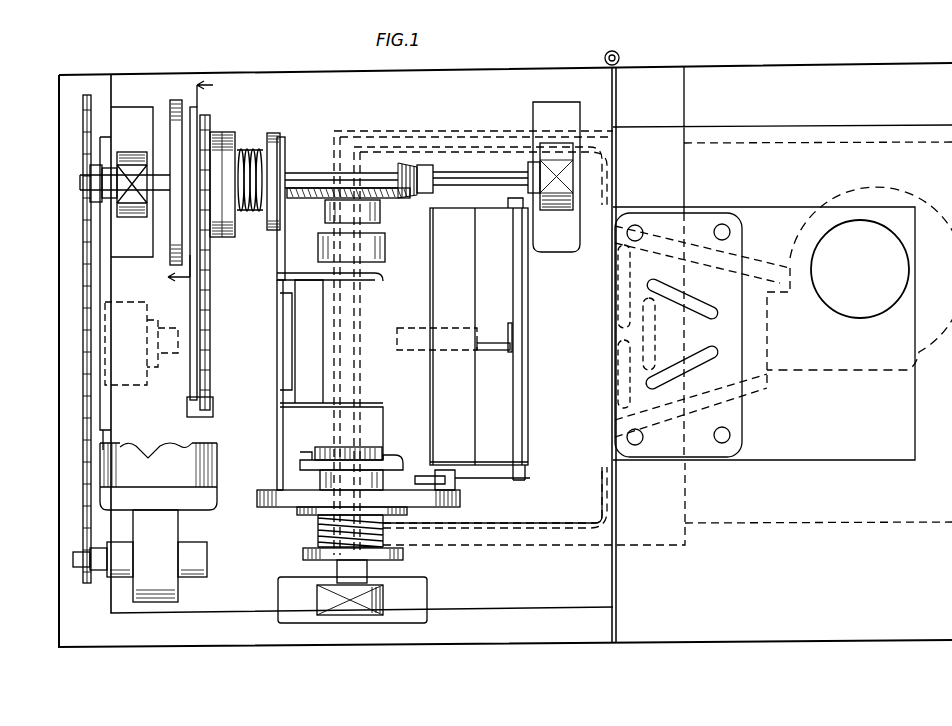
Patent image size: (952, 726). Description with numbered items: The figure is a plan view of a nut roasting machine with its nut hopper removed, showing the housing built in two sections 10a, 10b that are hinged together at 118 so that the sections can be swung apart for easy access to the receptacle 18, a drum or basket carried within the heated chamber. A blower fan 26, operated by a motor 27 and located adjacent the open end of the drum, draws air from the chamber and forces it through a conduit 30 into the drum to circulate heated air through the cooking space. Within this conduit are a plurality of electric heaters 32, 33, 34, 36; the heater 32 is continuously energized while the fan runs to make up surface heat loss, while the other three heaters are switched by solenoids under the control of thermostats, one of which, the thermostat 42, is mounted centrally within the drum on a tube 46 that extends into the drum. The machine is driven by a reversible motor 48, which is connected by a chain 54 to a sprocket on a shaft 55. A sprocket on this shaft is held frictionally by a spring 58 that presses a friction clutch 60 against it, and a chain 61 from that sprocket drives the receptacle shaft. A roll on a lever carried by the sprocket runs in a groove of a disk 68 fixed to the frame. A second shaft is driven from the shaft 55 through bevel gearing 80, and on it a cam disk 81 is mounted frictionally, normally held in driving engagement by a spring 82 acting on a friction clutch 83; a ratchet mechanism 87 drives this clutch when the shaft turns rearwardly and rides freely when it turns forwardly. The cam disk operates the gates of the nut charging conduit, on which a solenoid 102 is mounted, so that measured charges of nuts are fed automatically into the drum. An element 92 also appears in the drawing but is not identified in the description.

The housing section 10a is at (583, 633).
The housing section 10b is at (788, 633).
The receptacle 18 is at (576, 536).
The blower fan 26 is at (925, 205).
The motor 27 is at (852, 300).
The conduit 30 is at (771, 386).
The electric heater 32 is at (653, 353).
The electric heater 33 is at (618, 352).
The electric heater 34 is at (697, 305).
The electric heater 36 is at (700, 352).
The thermostat 42 is at (491, 332).
The tube 46 is at (216, 443).
The reversible motor 48 is at (178, 591).
The chain 54 is at (83, 356).
The shaft 55 is at (300, 175).
The spring 58 is at (268, 135).
The friction clutch 60 is at (230, 130).
The chain 61 is at (206, 290).
The disk 68 is at (176, 100).
The bevel gearing 80 is at (408, 198).
The cam disk 81 is at (280, 503).
The spring 82 is at (318, 540).
The friction clutch 83 is at (405, 512).
The ratchet mechanism 87 is at (316, 447).
The hub 92 is at (288, 488).
The solenoid 102 is at (505, 513).
The hinge 118 is at (605, 58).